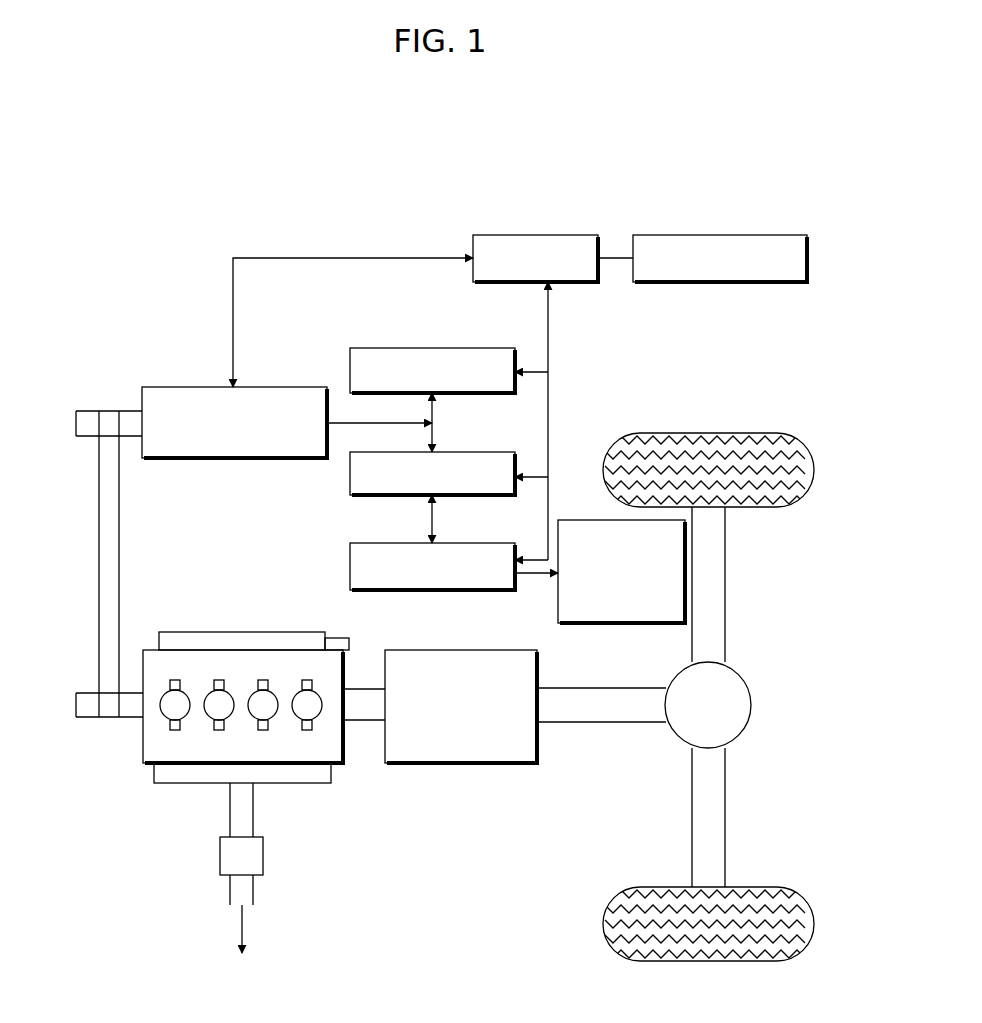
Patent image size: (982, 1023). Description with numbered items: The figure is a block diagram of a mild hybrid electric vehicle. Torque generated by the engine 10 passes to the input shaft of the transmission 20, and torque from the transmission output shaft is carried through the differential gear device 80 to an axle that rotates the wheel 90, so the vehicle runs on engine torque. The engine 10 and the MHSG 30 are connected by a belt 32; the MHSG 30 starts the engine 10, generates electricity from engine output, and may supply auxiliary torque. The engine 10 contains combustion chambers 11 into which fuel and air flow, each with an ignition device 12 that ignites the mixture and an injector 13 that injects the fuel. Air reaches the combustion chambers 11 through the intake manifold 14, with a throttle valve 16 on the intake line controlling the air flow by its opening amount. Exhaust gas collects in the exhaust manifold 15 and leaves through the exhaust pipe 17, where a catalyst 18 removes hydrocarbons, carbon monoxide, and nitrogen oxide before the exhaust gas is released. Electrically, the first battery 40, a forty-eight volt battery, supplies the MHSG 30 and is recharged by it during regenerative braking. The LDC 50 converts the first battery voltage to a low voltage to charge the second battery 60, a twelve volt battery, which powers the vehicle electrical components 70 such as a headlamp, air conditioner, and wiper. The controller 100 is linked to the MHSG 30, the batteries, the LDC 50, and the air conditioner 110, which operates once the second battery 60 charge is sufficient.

The engine 10 is at (250, 710).
The combustion chamber 11 is at (160, 705).
The ignition device 12 is at (172, 684).
The injector 13 is at (170, 725).
The intake manifold 14 is at (219, 632).
The exhaust manifold 15 is at (160, 773).
The throttle valve 16 is at (335, 638).
The exhaust pipe 17 is at (253, 812).
The catalyst 18 is at (263, 853).
The transmission 20 is at (504, 763).
The MHSG 30 is at (286, 387).
The belt 32 is at (99, 592).
The first battery 40 is at (462, 348).
The low voltage DC-DC converter (LDC) 50 is at (462, 452).
The second battery 60 is at (350, 548).
The vehicle electrical components 70 is at (638, 623).
The differential gear device 80 is at (751, 705).
The wheel 90 is at (707, 433).
The controller 100 is at (577, 235).
The air conditioner 110 is at (763, 235).